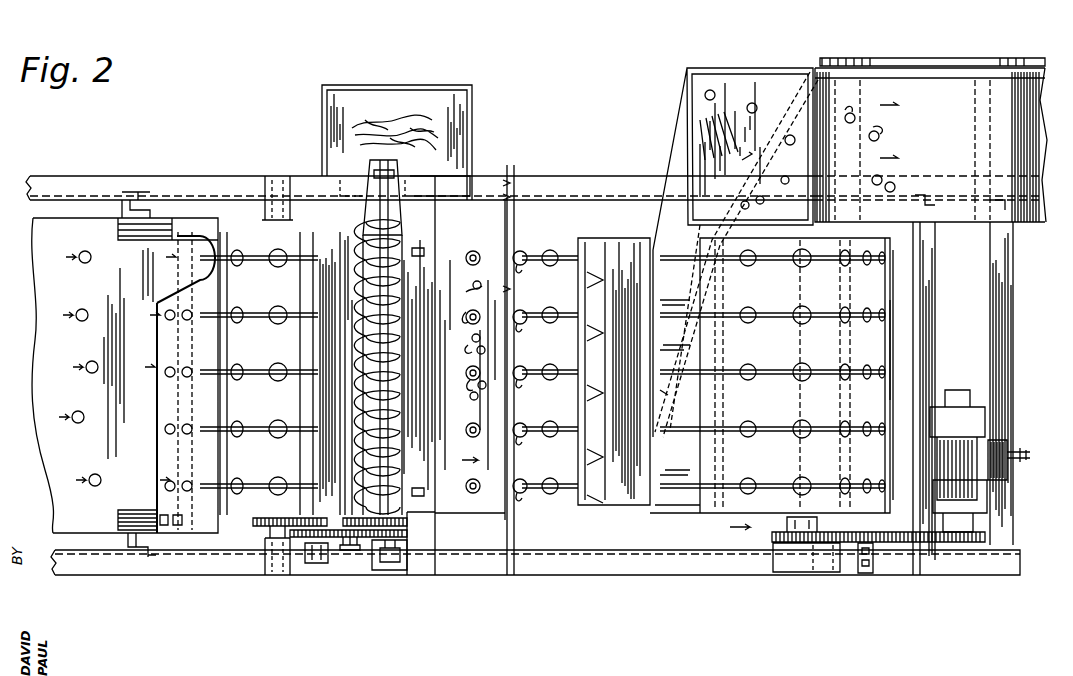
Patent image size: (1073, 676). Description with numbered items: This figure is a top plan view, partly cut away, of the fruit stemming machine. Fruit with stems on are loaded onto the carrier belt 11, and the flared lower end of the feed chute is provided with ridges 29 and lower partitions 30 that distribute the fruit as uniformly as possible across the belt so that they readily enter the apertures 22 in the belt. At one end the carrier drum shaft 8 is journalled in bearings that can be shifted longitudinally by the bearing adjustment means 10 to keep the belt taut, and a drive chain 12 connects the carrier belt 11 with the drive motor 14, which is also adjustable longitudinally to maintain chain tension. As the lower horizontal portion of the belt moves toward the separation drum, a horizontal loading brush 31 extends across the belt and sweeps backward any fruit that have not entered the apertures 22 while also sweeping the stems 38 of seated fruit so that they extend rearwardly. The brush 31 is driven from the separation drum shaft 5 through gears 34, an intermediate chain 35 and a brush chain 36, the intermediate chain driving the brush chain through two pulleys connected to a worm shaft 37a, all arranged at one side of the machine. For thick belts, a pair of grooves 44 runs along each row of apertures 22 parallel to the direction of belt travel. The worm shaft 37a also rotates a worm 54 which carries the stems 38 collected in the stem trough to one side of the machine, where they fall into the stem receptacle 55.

The separation drum shaft 5 is at (270, 533).
The carrier drum shaft 8 is at (795, 505).
The bearing adjustment means 10 is at (790, 543).
The carrier belt 11 is at (475, 513).
The drive chain 12 is at (873, 542).
The drive motor 14 is at (990, 405).
The apertures 22 is at (797, 325).
The ridges 29 is at (660, 380).
The lower partitions 30 is at (610, 247).
The loading brush 31 is at (347, 535).
The gears 34 is at (257, 522).
The intermediate chain 35 is at (353, 527).
The brush chain 36 is at (454, 392).
The worm shaft 37a is at (407, 580).
The stems 38 is at (485, 273).
The grooves 44 is at (320, 267).
The worm 54 is at (392, 235).
The receiving box 55 is at (472, 105).